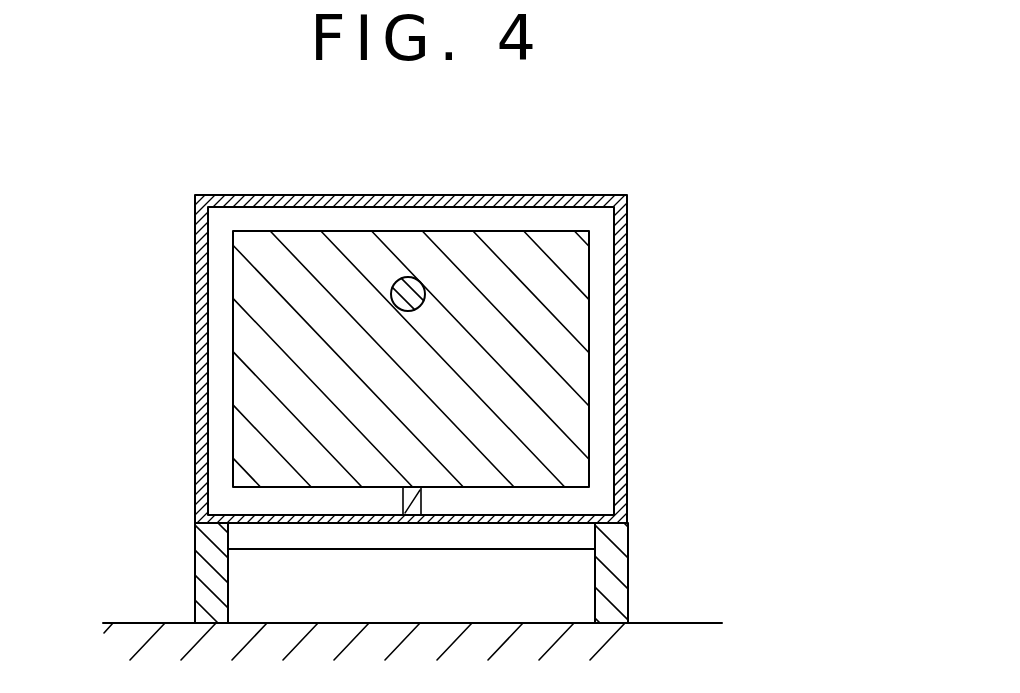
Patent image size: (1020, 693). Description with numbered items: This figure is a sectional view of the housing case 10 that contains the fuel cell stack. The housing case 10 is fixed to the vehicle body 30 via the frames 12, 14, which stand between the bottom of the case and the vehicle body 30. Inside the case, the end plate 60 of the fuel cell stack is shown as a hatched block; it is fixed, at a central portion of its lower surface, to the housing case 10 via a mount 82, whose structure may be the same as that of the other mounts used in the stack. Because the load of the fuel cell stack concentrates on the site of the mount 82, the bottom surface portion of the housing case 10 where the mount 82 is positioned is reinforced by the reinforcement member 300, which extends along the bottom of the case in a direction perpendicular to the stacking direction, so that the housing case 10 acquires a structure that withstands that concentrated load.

The housing case 10 is at (627, 362).
The end plate 60 is at (589, 298).
The mount 82 is at (403, 503).
The frame 12 is at (196, 580).
The frame 14 is at (628, 567).
The reinforcement member 300 is at (498, 532).
The vehicle body 30 is at (672, 622).